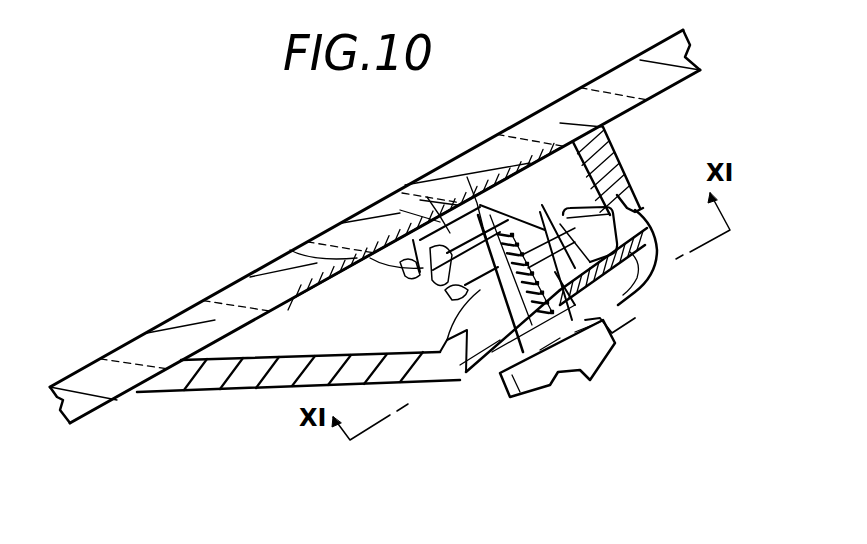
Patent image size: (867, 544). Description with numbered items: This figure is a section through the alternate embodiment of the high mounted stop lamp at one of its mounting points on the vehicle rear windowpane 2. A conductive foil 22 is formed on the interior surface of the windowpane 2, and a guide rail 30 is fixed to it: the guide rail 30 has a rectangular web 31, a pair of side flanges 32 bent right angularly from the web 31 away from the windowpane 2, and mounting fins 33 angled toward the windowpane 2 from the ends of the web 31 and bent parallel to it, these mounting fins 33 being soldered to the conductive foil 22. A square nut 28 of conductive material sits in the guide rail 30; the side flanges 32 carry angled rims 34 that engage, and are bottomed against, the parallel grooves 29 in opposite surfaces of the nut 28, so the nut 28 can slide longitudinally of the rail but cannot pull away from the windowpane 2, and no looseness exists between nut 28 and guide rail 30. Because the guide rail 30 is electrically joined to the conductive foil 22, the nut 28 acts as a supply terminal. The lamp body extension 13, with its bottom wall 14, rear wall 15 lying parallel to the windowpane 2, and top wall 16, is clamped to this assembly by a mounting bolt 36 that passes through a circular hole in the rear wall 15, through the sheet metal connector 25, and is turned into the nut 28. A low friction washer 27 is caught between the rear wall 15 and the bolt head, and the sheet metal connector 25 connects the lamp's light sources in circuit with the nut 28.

The vehicle windowpane 2 is at (570, 100).
The lamp body extension 13 is at (675, 146).
The bottom wall 14 is at (240, 382).
The rear wall 15 is at (615, 302).
The top wall 16 is at (618, 206).
The conductive foil 22 is at (333, 280).
The sheet metal connector 25 is at (450, 340).
The washer 27 is at (607, 313).
The square nut 28 is at (400, 210).
The groove 29 is at (453, 291).
The guide rail 30 is at (377, 265).
The web 31 is at (467, 177).
The side flange 32 is at (612, 210).
The mounting fin 33 is at (427, 197).
The rim 34 is at (530, 225).
The mounting bolt 36 is at (593, 357).